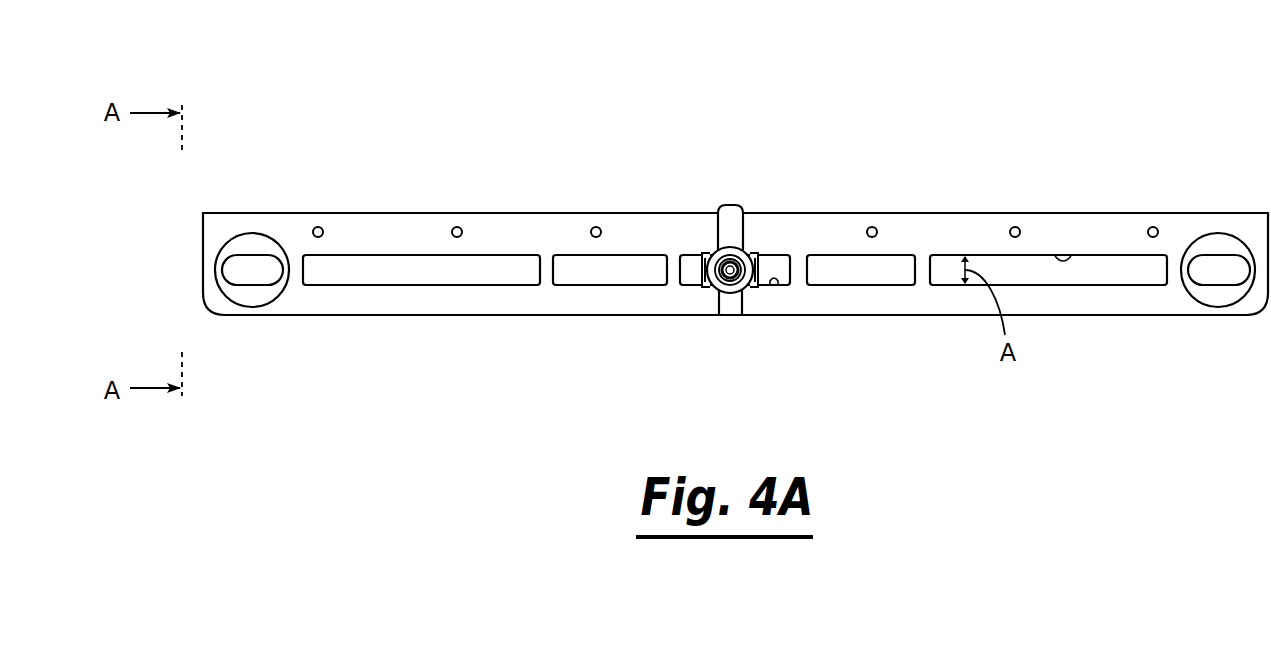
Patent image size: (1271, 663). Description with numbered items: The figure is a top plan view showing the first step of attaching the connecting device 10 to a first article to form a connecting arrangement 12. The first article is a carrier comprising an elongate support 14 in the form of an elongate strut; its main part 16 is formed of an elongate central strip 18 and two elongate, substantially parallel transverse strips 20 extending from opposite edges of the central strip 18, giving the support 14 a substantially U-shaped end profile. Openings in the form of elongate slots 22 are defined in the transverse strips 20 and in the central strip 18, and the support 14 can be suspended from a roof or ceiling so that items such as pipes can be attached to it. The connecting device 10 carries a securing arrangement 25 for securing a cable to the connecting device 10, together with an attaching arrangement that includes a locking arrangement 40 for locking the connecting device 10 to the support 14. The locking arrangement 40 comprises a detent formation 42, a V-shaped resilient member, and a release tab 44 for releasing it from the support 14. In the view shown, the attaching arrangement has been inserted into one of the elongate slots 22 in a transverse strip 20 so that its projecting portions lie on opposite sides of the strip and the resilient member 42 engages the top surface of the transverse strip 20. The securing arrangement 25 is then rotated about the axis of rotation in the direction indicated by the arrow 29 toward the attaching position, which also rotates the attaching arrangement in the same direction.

The connecting device 10 is at (715, 299).
The connecting arrangement 12 is at (892, 170).
The elongate support 14 is at (340, 317).
The main part 16 is at (470, 317).
The central strip 18 is at (545, 213).
The transverse strips 20 is at (378, 242).
The elongate slots 22 is at (1063, 259).
The securing arrangement 25 is at (746, 302).
The arrow 29 is at (757, 188).
The locking arrangement 40 is at (747, 232).
The detent formation 42 is at (716, 232).
The release tab 44 is at (744, 210).